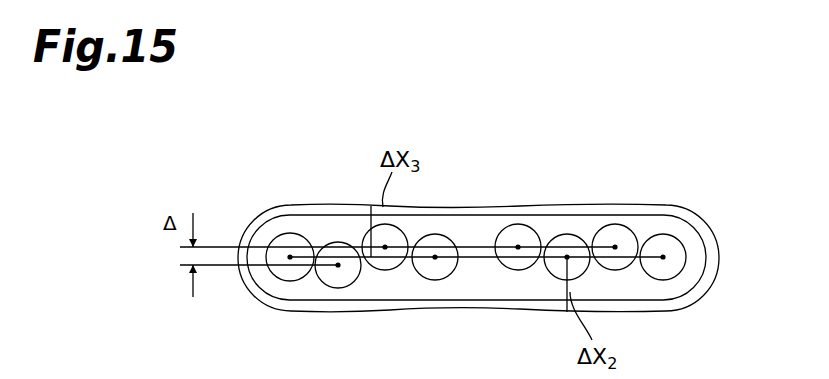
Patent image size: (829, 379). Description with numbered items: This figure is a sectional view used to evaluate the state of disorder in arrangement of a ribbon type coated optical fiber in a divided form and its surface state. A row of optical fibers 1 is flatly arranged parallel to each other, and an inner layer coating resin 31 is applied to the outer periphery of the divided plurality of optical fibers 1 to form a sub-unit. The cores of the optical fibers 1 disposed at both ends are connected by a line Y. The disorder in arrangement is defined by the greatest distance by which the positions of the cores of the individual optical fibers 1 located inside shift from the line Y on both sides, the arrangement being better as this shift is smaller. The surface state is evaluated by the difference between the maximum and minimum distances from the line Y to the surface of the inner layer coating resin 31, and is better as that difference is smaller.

The optical fiber 1 is at (697, 200).
The inner layer coating resin 31 is at (277, 281).
The line Y is at (657, 266).